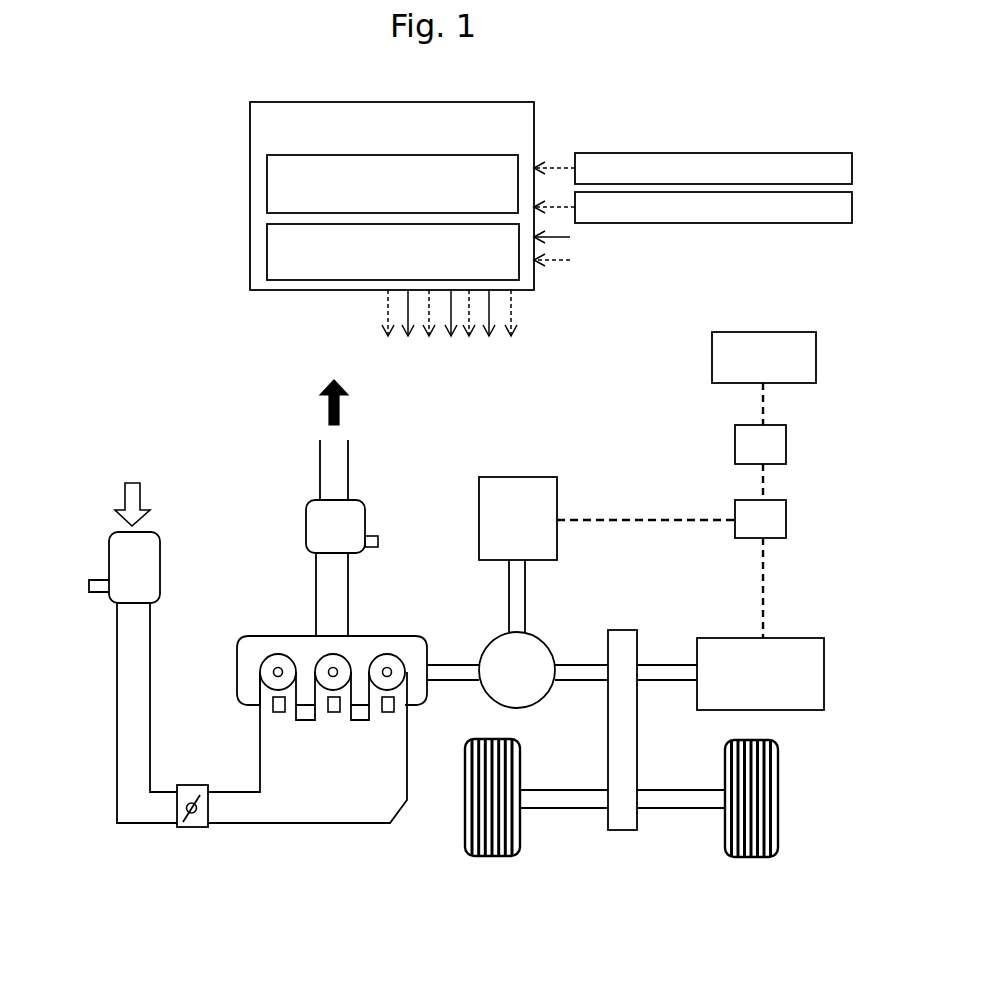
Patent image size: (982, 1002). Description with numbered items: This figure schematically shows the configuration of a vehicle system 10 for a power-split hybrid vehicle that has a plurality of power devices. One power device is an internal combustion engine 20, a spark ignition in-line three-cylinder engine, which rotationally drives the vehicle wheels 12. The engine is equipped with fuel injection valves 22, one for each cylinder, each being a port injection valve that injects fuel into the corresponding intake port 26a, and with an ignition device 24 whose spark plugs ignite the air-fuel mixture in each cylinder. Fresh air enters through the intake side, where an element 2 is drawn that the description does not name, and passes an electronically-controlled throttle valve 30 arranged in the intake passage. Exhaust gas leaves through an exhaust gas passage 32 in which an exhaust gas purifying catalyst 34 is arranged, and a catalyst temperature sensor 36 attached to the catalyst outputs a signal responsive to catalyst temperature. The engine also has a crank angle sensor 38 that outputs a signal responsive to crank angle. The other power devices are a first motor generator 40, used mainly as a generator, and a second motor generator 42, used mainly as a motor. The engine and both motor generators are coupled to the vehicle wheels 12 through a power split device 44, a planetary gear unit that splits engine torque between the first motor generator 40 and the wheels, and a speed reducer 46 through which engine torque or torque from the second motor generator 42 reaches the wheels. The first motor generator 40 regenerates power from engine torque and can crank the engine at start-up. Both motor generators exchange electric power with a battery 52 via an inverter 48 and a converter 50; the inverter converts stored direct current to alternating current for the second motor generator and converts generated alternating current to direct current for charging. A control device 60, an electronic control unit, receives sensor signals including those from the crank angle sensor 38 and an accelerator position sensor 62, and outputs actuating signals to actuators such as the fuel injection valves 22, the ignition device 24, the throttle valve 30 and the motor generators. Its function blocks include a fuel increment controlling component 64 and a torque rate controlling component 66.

The intake passage with air cleaner 2 is at (107, 580).
The vehicle system 10 is at (166, 301).
The vehicle wheels 12 is at (520, 763).
The internal combustion engine 20 is at (240, 613).
The fuel injection valves 22 is at (268, 704).
The ignition device 24 is at (273, 671).
The intake port 26a is at (259, 697).
The throttle valve 30 is at (191, 828).
The exhaust gas passage 32 is at (348, 618).
The exhaust gas purifying catalyst 34 is at (365, 523).
The catalyst temperature sensor 36 is at (378, 541).
The crank angle sensor 38 is at (768, 153).
The first motor generator 40 is at (525, 476).
The second motor generator 42 is at (790, 638).
The power split device 44 is at (545, 640).
The speed reducer 46 is at (620, 630).
The inverter 48 is at (778, 500).
The converter 50 is at (778, 424).
The battery 52 is at (712, 358).
The control device 60 is at (343, 95).
The accelerator position sensor 62 is at (768, 224).
The fuel increment controlling component 64 is at (267, 181).
The torque rate controlling component 66 is at (267, 247).